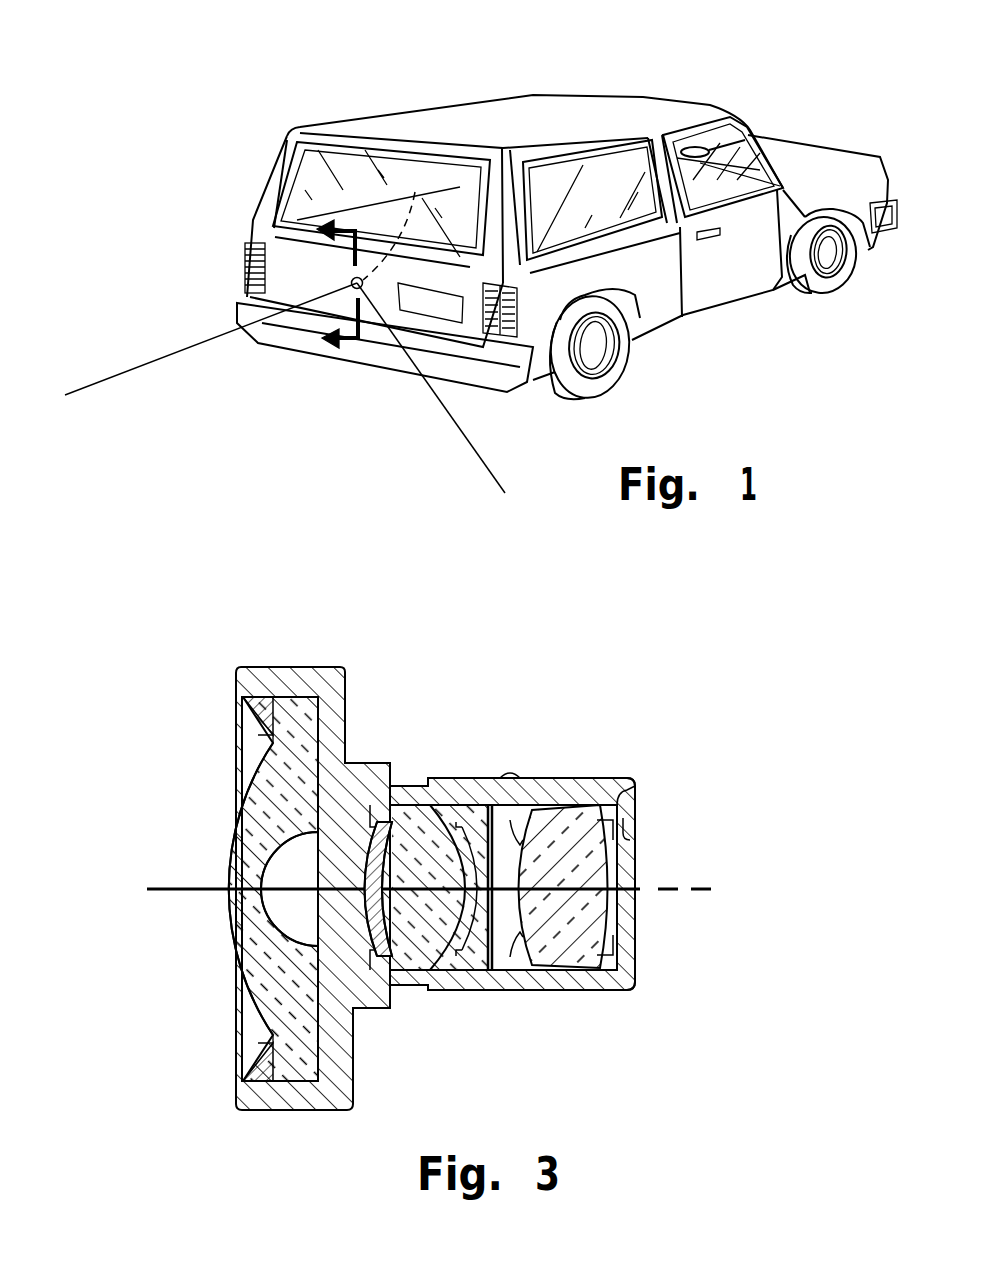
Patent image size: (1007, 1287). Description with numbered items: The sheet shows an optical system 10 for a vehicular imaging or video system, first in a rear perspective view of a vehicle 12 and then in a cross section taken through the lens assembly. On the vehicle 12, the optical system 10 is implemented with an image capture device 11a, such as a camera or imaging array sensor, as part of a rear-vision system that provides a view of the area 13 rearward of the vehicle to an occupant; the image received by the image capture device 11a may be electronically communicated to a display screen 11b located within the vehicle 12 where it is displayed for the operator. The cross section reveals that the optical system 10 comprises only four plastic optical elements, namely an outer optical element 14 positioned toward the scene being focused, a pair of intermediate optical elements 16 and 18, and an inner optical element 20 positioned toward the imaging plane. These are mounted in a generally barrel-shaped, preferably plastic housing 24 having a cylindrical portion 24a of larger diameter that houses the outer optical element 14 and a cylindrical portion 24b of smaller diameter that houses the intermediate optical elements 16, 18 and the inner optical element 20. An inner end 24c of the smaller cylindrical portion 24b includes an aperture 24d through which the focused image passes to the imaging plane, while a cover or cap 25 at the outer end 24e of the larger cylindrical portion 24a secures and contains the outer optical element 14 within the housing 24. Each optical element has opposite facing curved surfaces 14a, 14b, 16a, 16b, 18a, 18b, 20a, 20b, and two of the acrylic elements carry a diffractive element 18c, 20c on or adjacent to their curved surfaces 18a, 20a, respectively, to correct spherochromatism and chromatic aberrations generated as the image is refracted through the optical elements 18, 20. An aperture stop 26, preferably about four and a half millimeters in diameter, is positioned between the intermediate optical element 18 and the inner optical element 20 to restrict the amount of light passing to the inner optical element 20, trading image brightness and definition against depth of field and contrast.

In FIG. 1, the optical system 10 is at (326, 275).
In FIG. 3, the optical system 10 is at (548, 675).
In FIG. 1, the image capture device 11a is at (460, 190).
In FIG. 1, the display screen 11b is at (750, 135).
In FIG. 1, the vehicle 12 is at (527, 103).
In FIG. 1, the area rearward of the vehicle 13 is at (165, 392).
In FIG. 3, the outer optical element 14 is at (247, 863).
In FIG. 3, the curved surface of outer optical element 14a is at (240, 952).
In FIG. 3, the curved surface of outer optical element 14b is at (262, 912).
In FIG. 3, the intermediate optical element 16 is at (372, 968).
In FIG. 3, the curved surface of intermediate optical element 16a is at (358, 880).
In FIG. 3, the curved surface of intermediate optical element 16b is at (384, 822).
In FIG. 3, the intermediate optical element 18 is at (428, 782).
In FIG. 3, the curved surface of intermediate optical element 18a is at (437, 980).
In FIG. 3, the curved surface of intermediate optical element 18b is at (498, 972).
In FIG. 3, the diffractive element 18c is at (410, 822).
In FIG. 3, the inner optical element 20 is at (630, 780).
In FIG. 3, the curved surface of inner optical element 20a is at (543, 990).
In FIG. 3, the curved surface of inner optical element 20b is at (636, 940).
In FIG. 3, the diffractive element 20c is at (593, 780).
In FIG. 3, the housing 24 is at (353, 691).
In FIG. 3, the cylindrical portion 24a is at (295, 668).
In FIG. 3, the cylindrical portion 24b is at (533, 777).
In FIG. 3, the inner end 24c is at (627, 813).
In FIG. 3, the aperture 24d is at (625, 835).
In FIG. 3, the outer end 24e is at (234, 755).
In FIG. 3, the cover or cap 25 is at (233, 712).
In FIG. 3, the aperture stop 26 is at (522, 830).